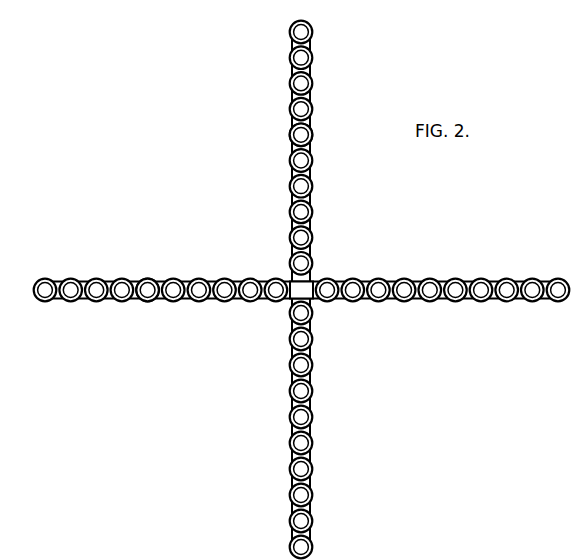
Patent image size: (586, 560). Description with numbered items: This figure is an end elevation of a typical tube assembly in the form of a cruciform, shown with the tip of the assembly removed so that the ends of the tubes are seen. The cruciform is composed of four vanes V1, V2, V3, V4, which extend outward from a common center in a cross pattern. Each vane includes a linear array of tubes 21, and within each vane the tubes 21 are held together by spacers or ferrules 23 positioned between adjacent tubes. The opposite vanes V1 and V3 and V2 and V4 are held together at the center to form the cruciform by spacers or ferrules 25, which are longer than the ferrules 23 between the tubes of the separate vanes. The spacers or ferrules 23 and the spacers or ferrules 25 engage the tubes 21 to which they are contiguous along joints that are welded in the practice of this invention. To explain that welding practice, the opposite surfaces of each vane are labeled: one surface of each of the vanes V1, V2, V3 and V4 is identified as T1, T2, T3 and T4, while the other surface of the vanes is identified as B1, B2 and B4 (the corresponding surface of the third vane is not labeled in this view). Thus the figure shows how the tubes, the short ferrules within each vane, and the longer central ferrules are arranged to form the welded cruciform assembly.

The tubes 21 is at (391, 276).
The spacers or ferrules 23 is at (225, 279).
The spacers or ferrules 25 is at (306, 287).
The vane V1 is at (312, 443).
The vane V2 is at (540, 262).
The vane V3 is at (290, 86).
The vane V4 is at (97, 302).
The surface of vane T1 is at (312, 391).
The surface of vane T2 is at (482, 279).
The surface of vane T3 is at (290, 136).
The surface of vane T4 is at (149, 302).
The surface of vane B1 is at (291, 418).
The surface of vane B2 is at (506, 302).
The surface of vane B4 is at (312, 136).